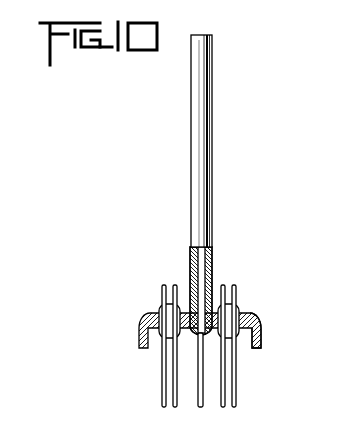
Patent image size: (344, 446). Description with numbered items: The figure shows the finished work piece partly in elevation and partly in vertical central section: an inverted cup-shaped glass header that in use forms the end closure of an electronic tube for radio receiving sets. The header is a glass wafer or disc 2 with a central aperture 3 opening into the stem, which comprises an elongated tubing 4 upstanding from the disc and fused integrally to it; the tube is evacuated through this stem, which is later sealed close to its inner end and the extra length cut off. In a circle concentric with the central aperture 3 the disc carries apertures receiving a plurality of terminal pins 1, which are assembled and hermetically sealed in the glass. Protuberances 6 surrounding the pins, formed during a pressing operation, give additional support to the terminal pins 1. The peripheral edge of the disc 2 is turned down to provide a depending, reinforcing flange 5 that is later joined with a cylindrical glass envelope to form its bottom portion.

The terminal pins 1 is at (238, 289).
The glass wafer or disc 2 is at (238, 320).
The central aperture 3 is at (208, 304).
The elongated tubing 4 is at (208, 164).
The depending reinforcing flange 5 is at (262, 334).
The protuberances 6 is at (161, 306).